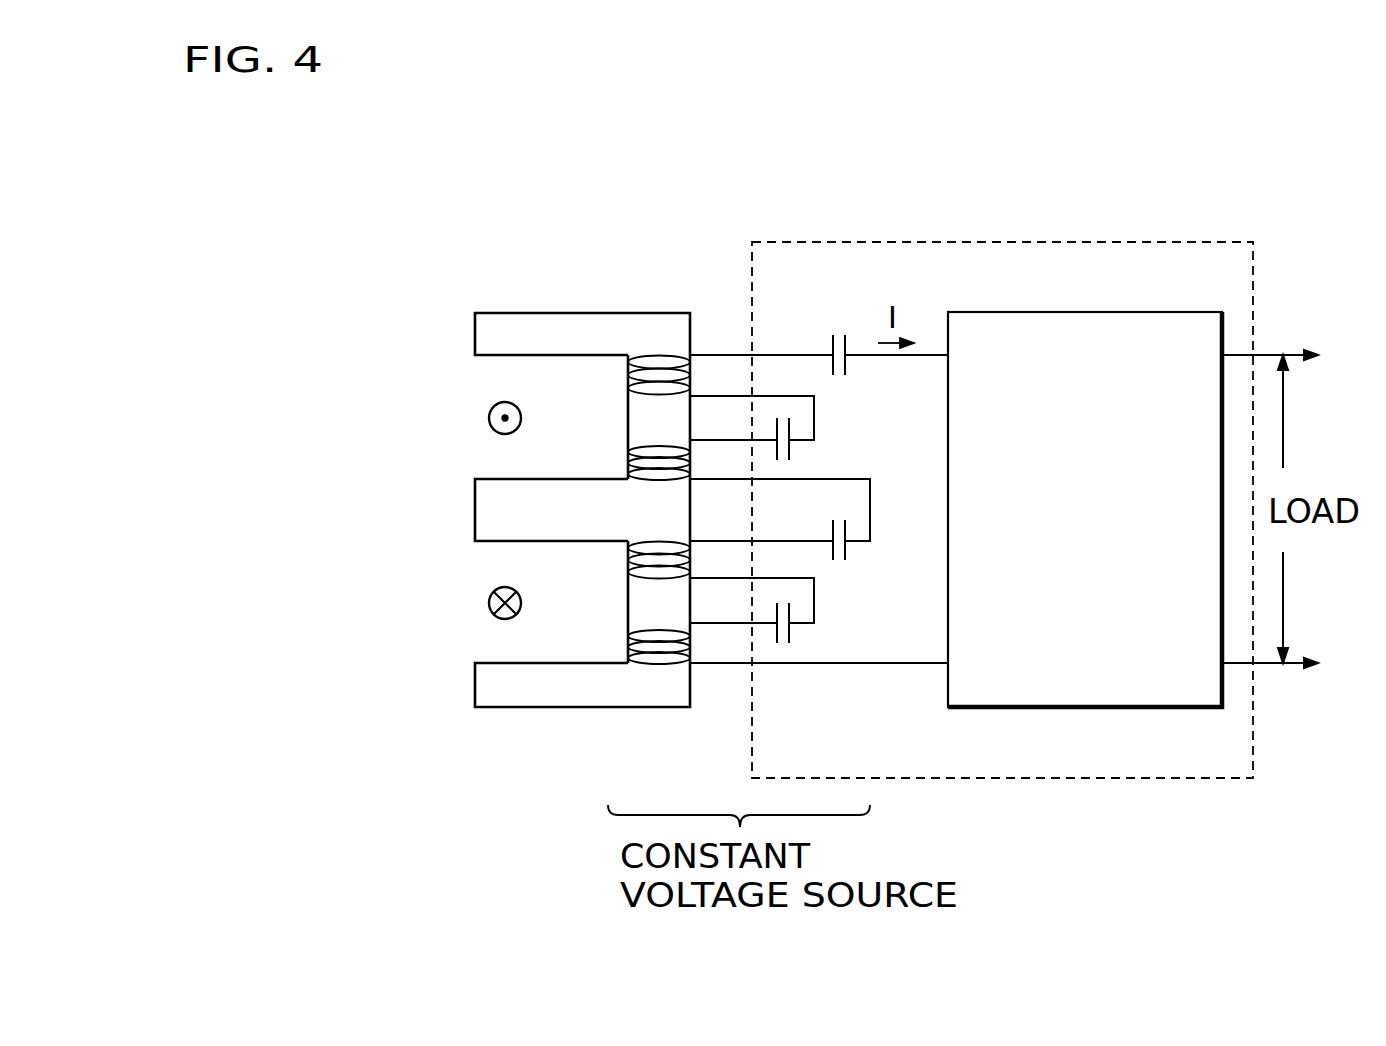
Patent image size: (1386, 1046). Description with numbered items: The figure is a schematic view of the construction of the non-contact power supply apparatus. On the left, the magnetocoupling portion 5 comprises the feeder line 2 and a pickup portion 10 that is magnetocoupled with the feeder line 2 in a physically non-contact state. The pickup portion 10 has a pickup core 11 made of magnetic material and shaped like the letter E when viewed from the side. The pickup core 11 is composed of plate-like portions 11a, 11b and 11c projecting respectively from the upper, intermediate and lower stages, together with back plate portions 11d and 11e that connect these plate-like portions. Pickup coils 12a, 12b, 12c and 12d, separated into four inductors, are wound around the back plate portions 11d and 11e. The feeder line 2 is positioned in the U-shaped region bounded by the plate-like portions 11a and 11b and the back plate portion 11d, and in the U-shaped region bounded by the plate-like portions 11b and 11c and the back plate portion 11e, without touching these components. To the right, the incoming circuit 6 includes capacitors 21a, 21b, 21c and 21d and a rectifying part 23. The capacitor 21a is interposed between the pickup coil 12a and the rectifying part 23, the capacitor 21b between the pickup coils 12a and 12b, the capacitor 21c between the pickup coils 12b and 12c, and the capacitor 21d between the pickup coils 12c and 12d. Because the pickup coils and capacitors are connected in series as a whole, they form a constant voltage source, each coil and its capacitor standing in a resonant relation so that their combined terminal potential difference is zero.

The feeder line 2 is at (488, 419).
The magnetocoupling portion 5 is at (557, 310).
The incoming circuit 6 is at (1026, 242).
The pickup portion 10 is at (683, 300).
The pickup core 11 is at (627, 310).
The plate-like portion 11a is at (494, 318).
The plate-like portion 11b is at (478, 510).
The plate-like portion 11c is at (551, 697).
The back plate portion 11d is at (633, 431).
The back plate portion 11e is at (633, 609).
The pickup coil 12a is at (628, 375).
The pickup coil 12b is at (628, 458).
The pickup coil 12c is at (628, 556).
The pickup coil 12d is at (628, 647).
The capacitor 21a is at (834, 334).
The capacitor 21b is at (788, 458).
The capacitor 21c is at (838, 560).
The capacitor 21d is at (784, 643).
The rectifying part 23 is at (1100, 572).